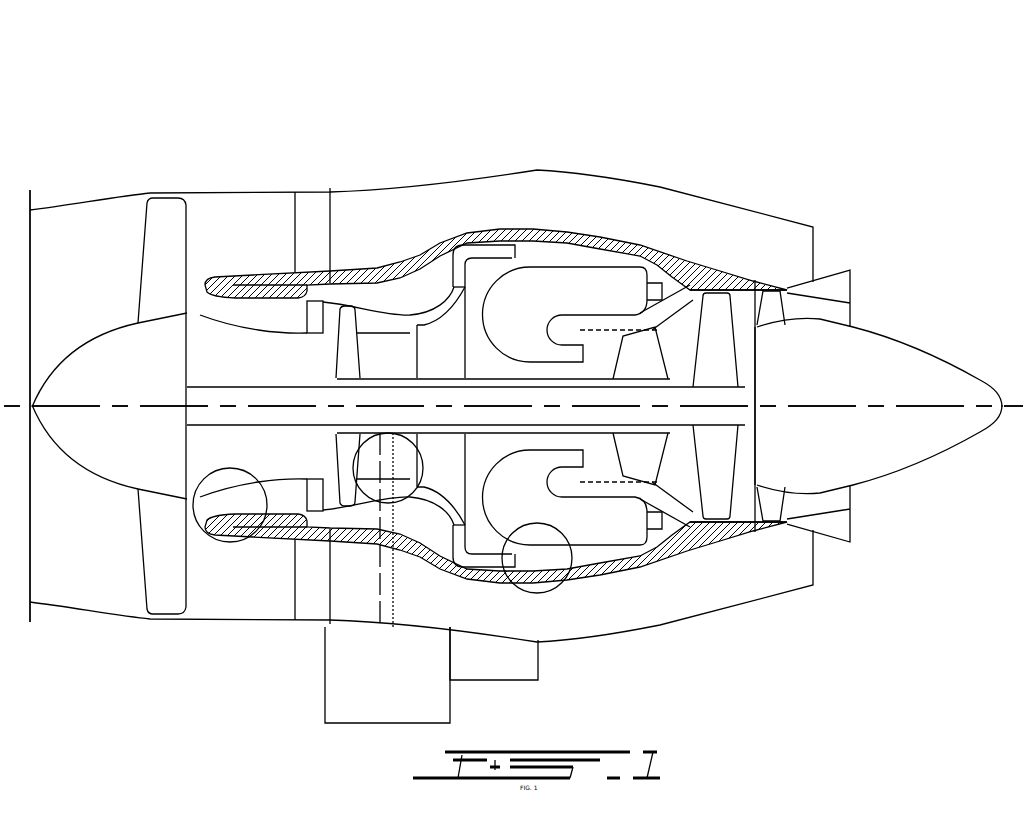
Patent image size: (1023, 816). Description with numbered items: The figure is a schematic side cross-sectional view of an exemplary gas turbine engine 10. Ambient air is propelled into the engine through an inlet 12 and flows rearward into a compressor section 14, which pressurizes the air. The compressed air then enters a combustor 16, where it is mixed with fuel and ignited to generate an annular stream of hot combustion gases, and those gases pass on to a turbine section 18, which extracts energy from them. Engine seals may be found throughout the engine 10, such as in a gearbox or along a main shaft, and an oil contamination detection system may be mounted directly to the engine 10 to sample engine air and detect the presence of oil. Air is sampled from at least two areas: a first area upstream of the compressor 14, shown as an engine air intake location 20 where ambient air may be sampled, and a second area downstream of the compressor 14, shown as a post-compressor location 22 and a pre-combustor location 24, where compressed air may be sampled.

The engine 10 is at (696, 132).
The inlet 12 is at (158, 537).
The compressor section 14 is at (380, 318).
The combustor 16 is at (567, 283).
The turbine section 18 is at (683, 470).
The engine air intake location 20 is at (228, 540).
The post-compressor location 22 is at (403, 500).
The pre-combustor location 24 is at (553, 587).